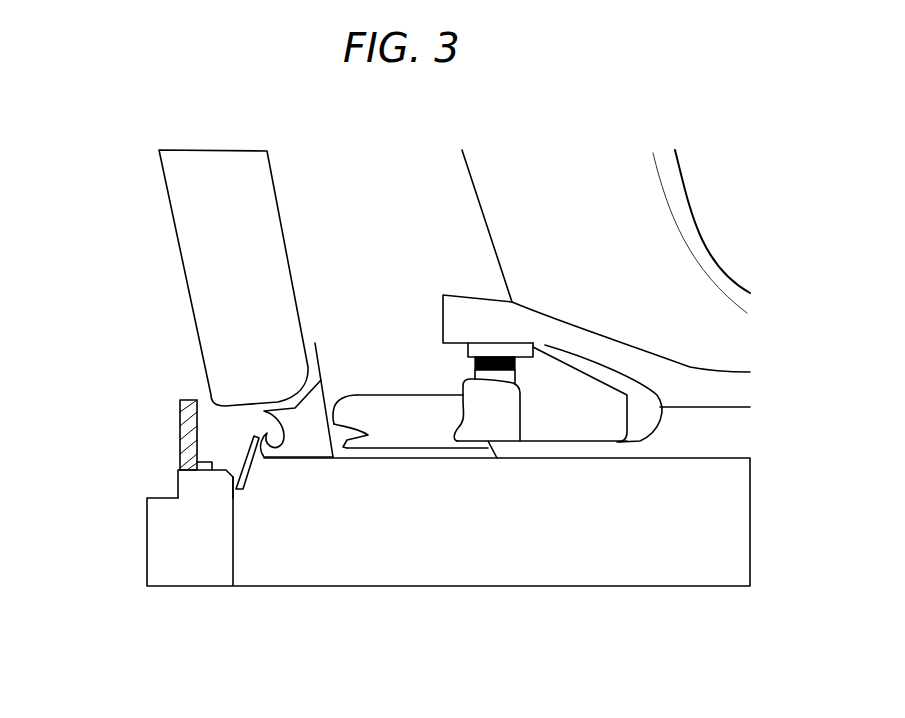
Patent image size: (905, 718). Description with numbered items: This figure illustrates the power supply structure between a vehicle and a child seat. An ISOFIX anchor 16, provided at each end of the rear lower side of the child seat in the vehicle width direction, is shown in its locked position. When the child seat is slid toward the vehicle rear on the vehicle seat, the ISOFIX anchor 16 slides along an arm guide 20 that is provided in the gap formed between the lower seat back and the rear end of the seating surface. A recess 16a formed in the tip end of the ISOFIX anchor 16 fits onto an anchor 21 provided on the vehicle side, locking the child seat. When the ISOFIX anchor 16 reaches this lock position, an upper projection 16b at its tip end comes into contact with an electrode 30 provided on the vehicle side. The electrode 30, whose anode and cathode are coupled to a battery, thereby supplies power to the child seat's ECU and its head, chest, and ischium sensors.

The ISOFIX anchor 16 is at (400, 410).
The recess 16a is at (368, 437).
The upper projection 16b is at (347, 413).
The arm guide 20 is at (295, 435).
The anchor 21 is at (248, 467).
The electrode 30 is at (180, 412).